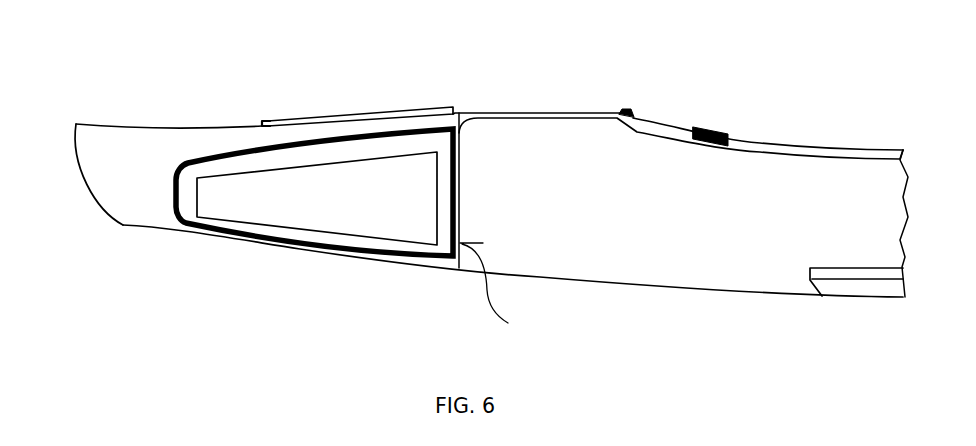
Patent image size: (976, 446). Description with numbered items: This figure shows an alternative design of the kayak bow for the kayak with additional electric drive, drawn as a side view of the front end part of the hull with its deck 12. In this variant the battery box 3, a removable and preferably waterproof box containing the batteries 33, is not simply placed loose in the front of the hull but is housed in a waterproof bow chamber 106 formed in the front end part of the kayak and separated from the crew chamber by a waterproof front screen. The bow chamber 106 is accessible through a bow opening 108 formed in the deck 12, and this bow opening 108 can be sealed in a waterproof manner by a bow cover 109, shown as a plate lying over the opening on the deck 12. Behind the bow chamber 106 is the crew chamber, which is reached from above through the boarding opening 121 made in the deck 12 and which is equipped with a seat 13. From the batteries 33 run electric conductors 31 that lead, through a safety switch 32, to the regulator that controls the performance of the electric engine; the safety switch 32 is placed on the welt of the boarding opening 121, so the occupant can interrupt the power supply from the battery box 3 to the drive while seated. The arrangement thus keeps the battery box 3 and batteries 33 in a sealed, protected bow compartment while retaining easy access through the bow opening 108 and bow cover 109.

The battery box 3 is at (338, 240).
The deck 12 is at (533, 112).
The seat 13 is at (853, 273).
The electric conductors 31 is at (558, 120).
The safety switch 32 is at (625, 110).
The batteries 33 is at (220, 197).
The bow chamber 106 is at (132, 187).
The bow opening 108 is at (296, 123).
The bow cover 109 is at (361, 112).
The boarding opening 121 is at (773, 216).